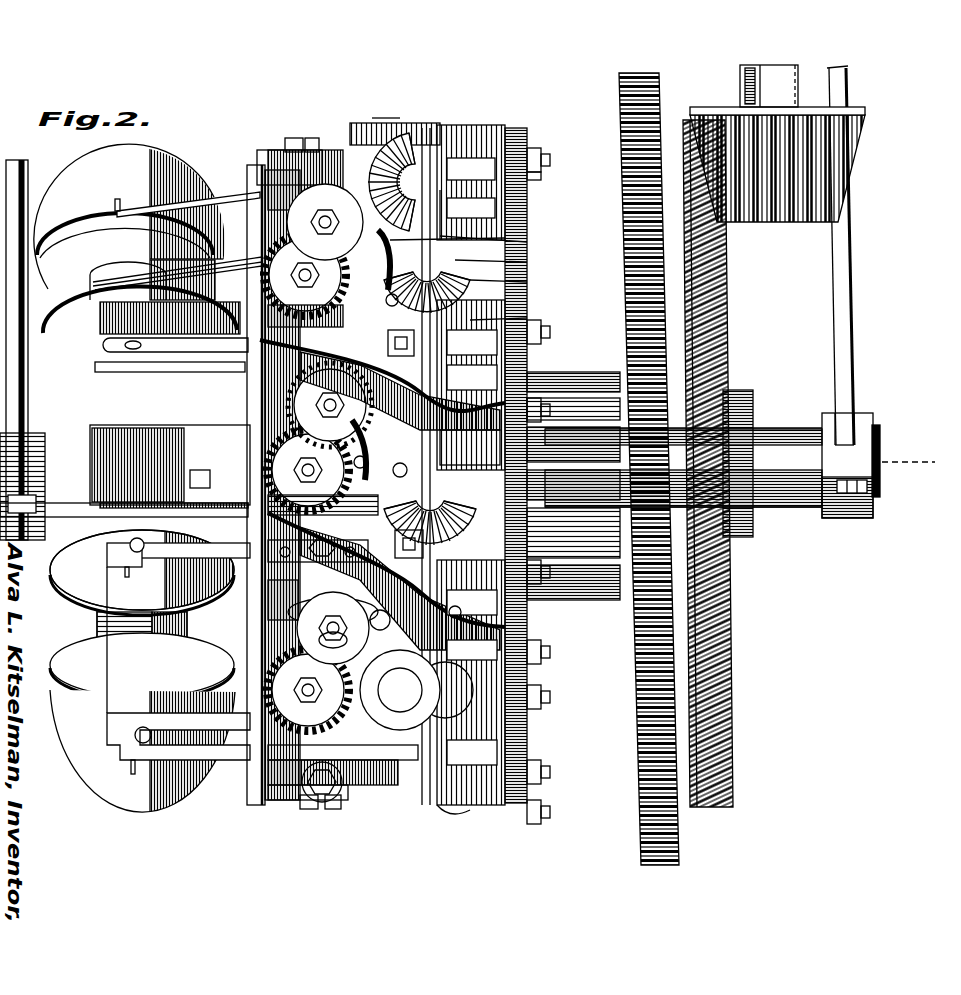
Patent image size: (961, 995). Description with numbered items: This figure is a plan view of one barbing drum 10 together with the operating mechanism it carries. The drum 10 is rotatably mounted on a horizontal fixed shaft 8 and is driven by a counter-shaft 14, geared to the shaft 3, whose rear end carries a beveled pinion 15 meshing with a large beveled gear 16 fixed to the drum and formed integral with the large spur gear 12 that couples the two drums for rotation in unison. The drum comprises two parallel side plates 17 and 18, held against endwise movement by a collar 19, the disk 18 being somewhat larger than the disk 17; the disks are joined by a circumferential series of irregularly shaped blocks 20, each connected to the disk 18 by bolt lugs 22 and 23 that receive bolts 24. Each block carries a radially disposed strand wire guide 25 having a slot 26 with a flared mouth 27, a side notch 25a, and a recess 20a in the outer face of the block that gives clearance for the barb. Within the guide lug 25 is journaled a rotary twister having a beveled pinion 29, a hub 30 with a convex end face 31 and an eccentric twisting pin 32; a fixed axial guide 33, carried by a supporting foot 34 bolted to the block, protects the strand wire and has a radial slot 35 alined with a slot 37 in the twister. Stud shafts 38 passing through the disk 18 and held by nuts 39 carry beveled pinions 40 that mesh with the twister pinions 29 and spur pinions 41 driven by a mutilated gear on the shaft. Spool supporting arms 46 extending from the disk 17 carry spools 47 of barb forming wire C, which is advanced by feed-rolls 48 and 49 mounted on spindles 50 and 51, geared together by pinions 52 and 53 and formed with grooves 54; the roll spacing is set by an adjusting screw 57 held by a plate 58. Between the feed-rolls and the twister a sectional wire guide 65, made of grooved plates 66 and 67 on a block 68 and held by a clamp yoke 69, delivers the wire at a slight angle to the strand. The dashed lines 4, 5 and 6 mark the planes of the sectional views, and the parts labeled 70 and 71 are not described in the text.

The shaft 3 is at (913, 463).
The section line 4— 4 is at (383, 140).
The section line 5— 5 is at (850, 372).
The section line 6— 6 is at (862, 425).
The fixed shaft 8 is at (683, 463).
The barbing drum 10 is at (242, 336).
The spur gear 12 is at (635, 248).
The counter-shaft 14 is at (745, 68).
The beveled pinion 15 is at (782, 222).
The beveled gear 16 is at (732, 322).
The side plate 17 is at (178, 640).
The side plate 18 is at (527, 280).
The collar 19 is at (125, 482).
The block 20 is at (268, 215).
The recess 20a is at (480, 432).
The bolt lug 22 is at (455, 135).
The bolt lug 23 is at (551, 679).
The bolt 24 is at (573, 584).
The strand wire guide 25 is at (477, 419).
The notch 25a is at (527, 700).
The guide slot 26 is at (422, 479).
The flared mouth 27 is at (475, 835).
The twister pinion 29 is at (382, 372).
The twister hub 30 is at (323, 501).
The convex end face 31 is at (470, 815).
The twisting pin 32 is at (434, 621).
The fixed axial guide 33 is at (467, 430).
The supporting foot 34 is at (422, 249).
The radial slot 35 is at (434, 452).
The twister slot 37 is at (392, 160).
The stud shaft 38 is at (550, 168).
The nut 39 is at (541, 160).
The beveled pinion 40 is at (543, 714).
The spur pinion 41 is at (528, 530).
The spool supporting arm 46 is at (219, 483).
The barb forming wire spool 47 is at (112, 618).
The feed-roll 48 is at (330, 511).
The feed-roll 49 is at (270, 172).
The spindle 50 is at (319, 380).
The spindle 51 is at (289, 404).
The pinion 52 is at (331, 604).
The pinion 53 is at (260, 762).
The peripheral groove 54 is at (278, 150).
The adjusting screw 57 is at (317, 624).
The plate 58 is at (327, 544).
The sectional wire guide 65 is at (397, 550).
The upper grooved plate 66 is at (381, 574).
The lower grooved plate 67 is at (475, 606).
The guide block 68 is at (378, 467).
The clamp yoke 69 is at (352, 165).
The disc 70 is at (400, 690).
The hub 71 is at (350, 633).
The barb forming wire C is at (178, 483).